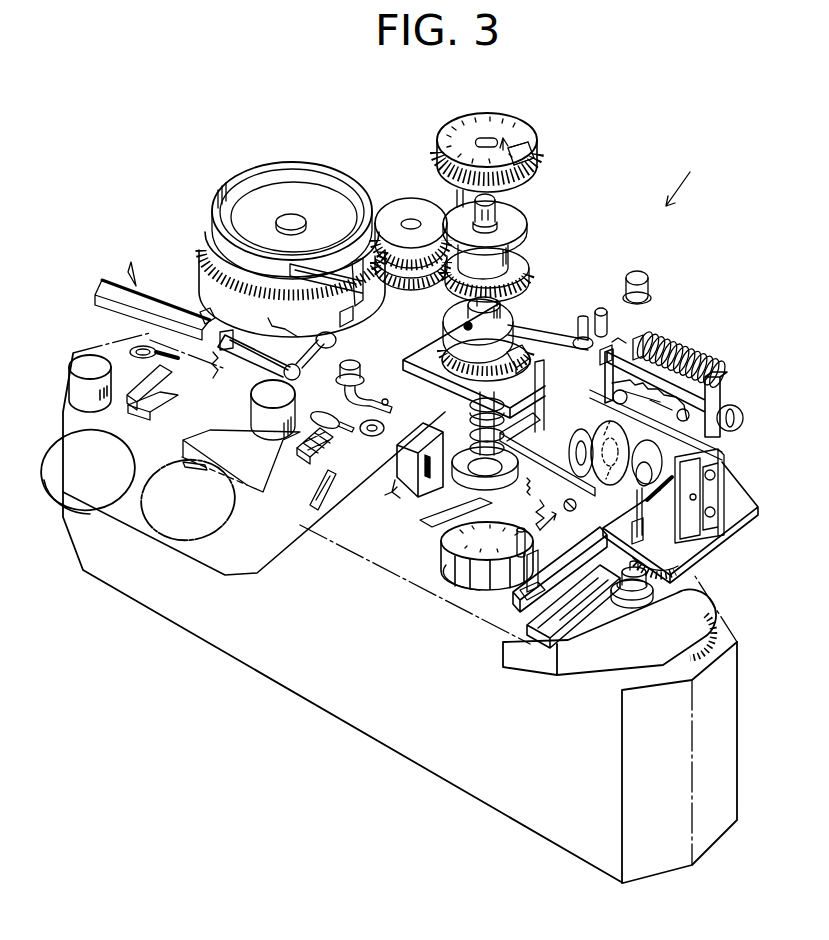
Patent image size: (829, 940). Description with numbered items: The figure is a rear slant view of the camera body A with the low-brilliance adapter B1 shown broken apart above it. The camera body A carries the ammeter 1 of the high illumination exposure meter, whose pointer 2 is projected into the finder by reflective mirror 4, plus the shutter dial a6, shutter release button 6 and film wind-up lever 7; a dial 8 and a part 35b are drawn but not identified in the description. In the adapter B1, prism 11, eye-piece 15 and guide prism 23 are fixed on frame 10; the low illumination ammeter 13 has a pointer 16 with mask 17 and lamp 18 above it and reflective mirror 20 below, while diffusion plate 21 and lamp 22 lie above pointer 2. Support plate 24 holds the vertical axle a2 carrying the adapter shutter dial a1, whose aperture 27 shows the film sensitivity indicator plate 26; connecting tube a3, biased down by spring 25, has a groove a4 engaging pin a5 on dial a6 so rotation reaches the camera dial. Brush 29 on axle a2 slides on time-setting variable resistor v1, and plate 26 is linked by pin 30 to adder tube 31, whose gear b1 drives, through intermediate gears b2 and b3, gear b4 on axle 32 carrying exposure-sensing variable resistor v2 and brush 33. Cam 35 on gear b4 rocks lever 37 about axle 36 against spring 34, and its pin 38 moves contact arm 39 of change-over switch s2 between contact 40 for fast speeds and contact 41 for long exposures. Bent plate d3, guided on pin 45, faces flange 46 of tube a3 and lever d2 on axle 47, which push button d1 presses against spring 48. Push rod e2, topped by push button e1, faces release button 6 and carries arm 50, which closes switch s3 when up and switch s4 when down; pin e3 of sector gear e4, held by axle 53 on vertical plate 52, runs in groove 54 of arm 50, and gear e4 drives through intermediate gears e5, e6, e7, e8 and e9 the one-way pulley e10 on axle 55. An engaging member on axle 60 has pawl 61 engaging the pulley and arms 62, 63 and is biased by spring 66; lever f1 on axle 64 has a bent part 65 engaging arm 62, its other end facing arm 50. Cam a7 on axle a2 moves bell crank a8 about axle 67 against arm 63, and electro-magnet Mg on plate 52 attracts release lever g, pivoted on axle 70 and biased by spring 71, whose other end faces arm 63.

The camera body A is at (272, 680).
The adapter B1 is at (693, 173).
The ammeter 1 is at (83, 363).
The pointer 2 is at (157, 395).
The reflective mirror 4 is at (140, 407).
The shutter release button 6 is at (640, 596).
The film wind-up lever 7 is at (660, 670).
The dial 8 is at (448, 540).
The frame 10 is at (720, 535).
The prism 11 is at (140, 522).
The ammeter 13 is at (277, 398).
The eye-piece 15 is at (45, 480).
The pointer 16 is at (328, 452).
The mask 17 is at (307, 460).
The lamp 18 is at (313, 412).
The reflective mirror 20 is at (327, 502).
The diffusion plate 21 is at (142, 384).
The lamp 22 is at (137, 350).
The guide prism 23 is at (226, 490).
The support plate 24 is at (427, 336).
The spring 25 is at (470, 406).
The film sensitivity indicator plate 26 is at (532, 142).
The aperture 27 is at (536, 152).
The brush 29 is at (516, 376).
The pin 30 is at (455, 197).
The adder tube 31 is at (526, 240).
The axle 32 is at (287, 218).
The brush 33 is at (312, 273).
The spring 34 is at (227, 380).
The cam 35 is at (252, 321).
The bracket 35b is at (372, 322).
The axle 36 is at (290, 364).
The lever 37 is at (213, 360).
The pin 38 is at (170, 357).
The contact arm 39 is at (112, 282).
The contact 40 is at (117, 307).
The contact 41 is at (147, 290).
The pin 45 is at (423, 460).
The flange 46 is at (491, 485).
The axle 47 is at (367, 435).
The spring 48 is at (387, 493).
The arm 50 is at (640, 540).
The vertical plate 52 is at (724, 495).
The axle 53 is at (692, 500).
The groove 54 is at (700, 520).
The axle 55 is at (624, 402).
The axle 60 is at (522, 484).
The pawl 61 is at (548, 485).
The arm 62 is at (505, 407).
The arm 63 is at (541, 375).
The axle 64 is at (570, 511).
The bent part 65 is at (470, 427).
The spring 66 is at (615, 345).
The axle 67 is at (587, 340).
The axle 70 is at (605, 352).
The spring 71 is at (648, 394).
The shutter dial a1 is at (478, 117).
The axle a2 is at (497, 212).
The connecting tube a3 is at (450, 517).
The groove a4 is at (533, 540).
The pin a5 is at (520, 577).
The shutter dial a6 is at (467, 567).
The cam a7 is at (510, 312).
The bell crank a8 is at (564, 328).
The gear b1 is at (528, 283).
The intermediate gear b2 is at (407, 280).
The intermediate gear b3 is at (400, 195).
The gear b4 is at (198, 243).
The push button d1 is at (358, 362).
The lever d2 is at (357, 397).
The bent plate d3 is at (417, 432).
The push button e1 is at (646, 275).
The push rod e2 is at (682, 572).
The pin e3 is at (670, 505).
The sector gear e4 is at (713, 452).
The intermediate gear e5 is at (646, 464).
The intermediate gear e6 is at (677, 417).
The intermediate gear e7 is at (652, 405).
The intermediate gear e8 is at (602, 468).
The intermediate gear e9 is at (570, 460).
The one-way pulley e10 is at (612, 376).
The lever f1 is at (548, 512).
The release lever g is at (637, 338).
The change-over switch s2 is at (198, 300).
The switch s3 is at (586, 546).
The switch s4 is at (598, 583).
The variable resistor v1 is at (445, 355).
The variable resistor v2 is at (255, 172).
The electro-magnet Mg is at (692, 372).